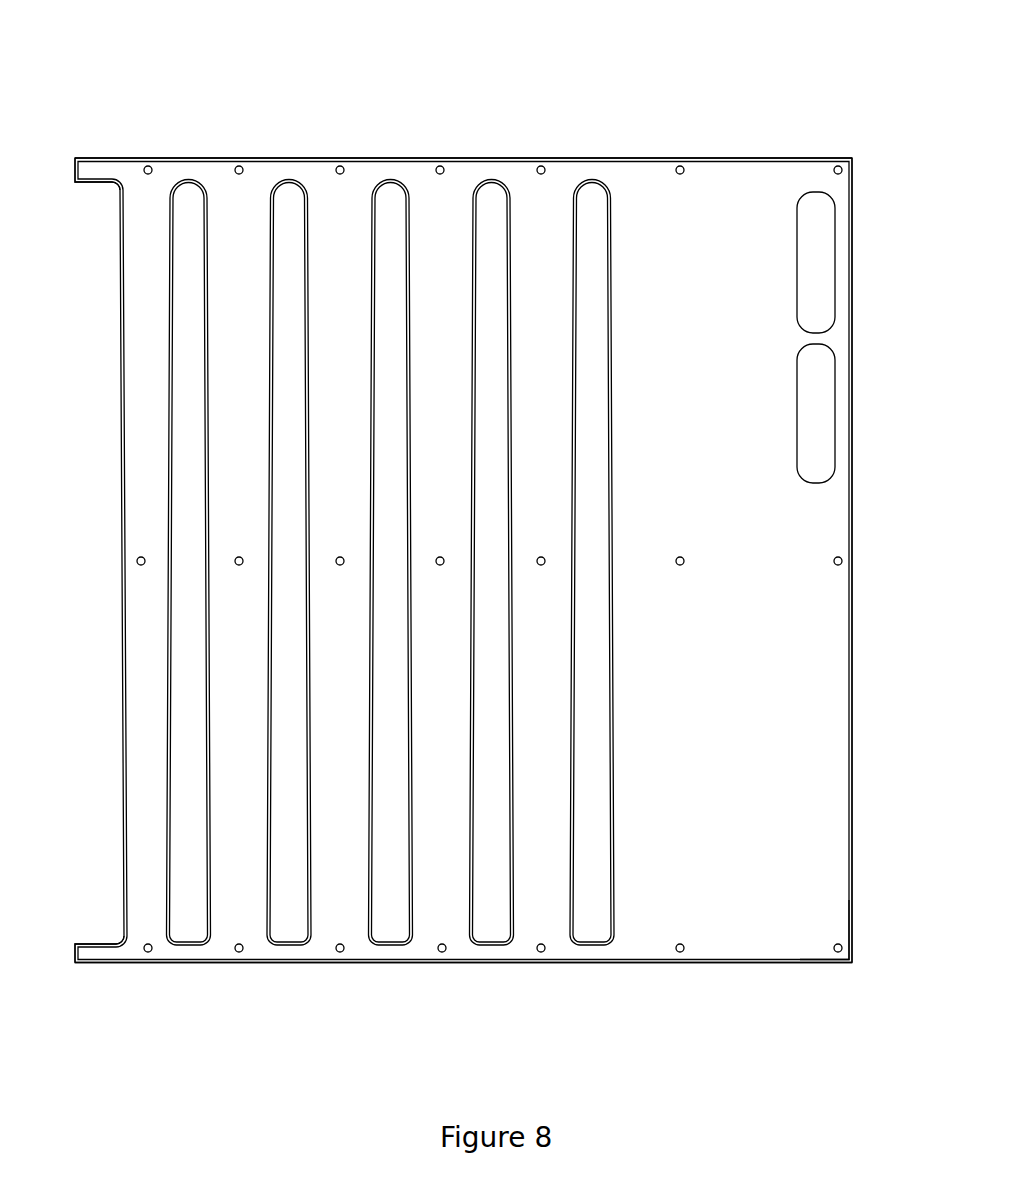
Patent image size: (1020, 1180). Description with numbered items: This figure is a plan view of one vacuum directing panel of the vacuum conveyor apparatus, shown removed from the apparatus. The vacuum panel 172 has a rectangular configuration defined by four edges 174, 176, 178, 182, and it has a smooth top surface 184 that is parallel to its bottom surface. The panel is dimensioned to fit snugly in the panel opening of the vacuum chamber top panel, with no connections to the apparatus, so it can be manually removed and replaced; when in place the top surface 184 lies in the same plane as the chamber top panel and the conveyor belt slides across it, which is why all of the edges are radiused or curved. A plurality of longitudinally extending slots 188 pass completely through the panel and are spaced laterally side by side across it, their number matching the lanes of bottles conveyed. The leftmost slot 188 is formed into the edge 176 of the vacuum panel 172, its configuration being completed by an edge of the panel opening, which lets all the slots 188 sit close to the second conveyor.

The vacuum panel 172 is at (712, 1008).
The edge of the panel 174 is at (448, 962).
The edge of the panel 176 is at (75, 172).
The edge of the panel 178 is at (347, 158).
The edge of the panel 182 is at (852, 520).
The top surface 184 is at (817, 913).
The slots 188 is at (93, 190).